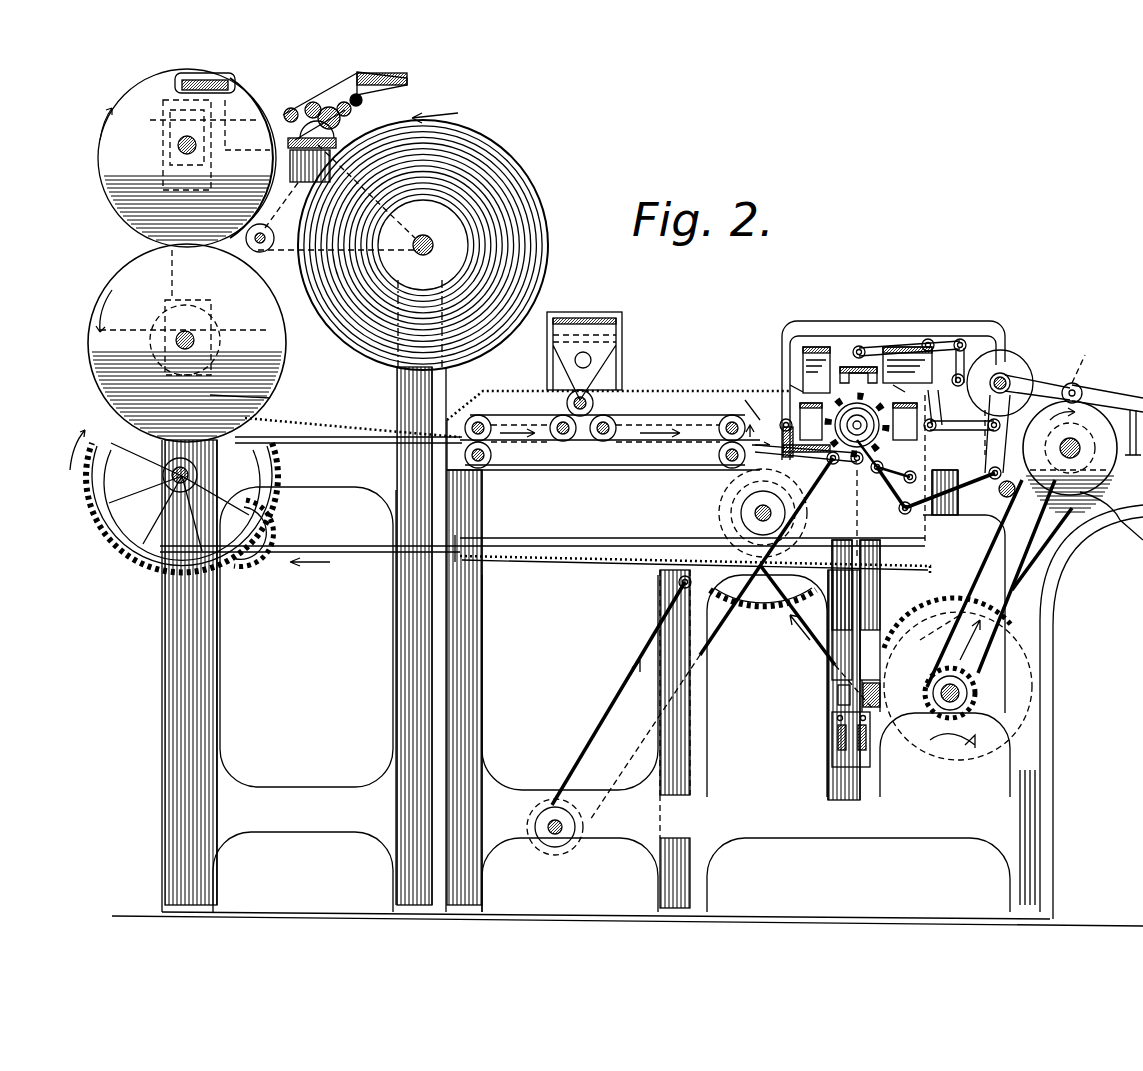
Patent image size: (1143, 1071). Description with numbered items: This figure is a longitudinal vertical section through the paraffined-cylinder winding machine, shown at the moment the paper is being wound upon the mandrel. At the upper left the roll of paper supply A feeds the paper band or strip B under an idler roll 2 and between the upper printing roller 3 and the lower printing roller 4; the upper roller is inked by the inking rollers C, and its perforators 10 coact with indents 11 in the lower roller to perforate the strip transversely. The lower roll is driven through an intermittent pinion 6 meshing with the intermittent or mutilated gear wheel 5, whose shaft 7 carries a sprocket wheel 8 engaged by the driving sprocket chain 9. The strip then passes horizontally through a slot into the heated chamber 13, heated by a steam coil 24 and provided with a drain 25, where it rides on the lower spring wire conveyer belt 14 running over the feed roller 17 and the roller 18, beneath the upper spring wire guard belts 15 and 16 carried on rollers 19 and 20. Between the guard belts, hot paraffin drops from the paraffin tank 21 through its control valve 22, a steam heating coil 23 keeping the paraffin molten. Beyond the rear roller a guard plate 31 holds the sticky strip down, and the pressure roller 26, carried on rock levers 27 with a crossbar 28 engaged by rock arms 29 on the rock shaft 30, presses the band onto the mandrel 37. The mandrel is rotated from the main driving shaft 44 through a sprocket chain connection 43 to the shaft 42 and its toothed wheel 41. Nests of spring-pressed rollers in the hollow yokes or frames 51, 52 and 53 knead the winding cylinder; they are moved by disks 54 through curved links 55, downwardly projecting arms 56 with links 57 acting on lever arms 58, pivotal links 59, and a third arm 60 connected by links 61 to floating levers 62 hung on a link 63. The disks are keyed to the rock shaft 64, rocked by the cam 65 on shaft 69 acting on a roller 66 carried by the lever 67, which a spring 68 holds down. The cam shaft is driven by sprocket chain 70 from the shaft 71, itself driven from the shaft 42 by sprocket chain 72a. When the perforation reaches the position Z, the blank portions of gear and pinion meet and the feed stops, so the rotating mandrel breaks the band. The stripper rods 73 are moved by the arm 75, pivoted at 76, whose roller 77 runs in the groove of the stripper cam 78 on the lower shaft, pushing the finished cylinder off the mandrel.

The roll of paper supply A is at (535, 225).
The paper band or strip B is at (388, 446).
The inking rollers C is at (316, 105).
The position mark Z is at (788, 437).
The idler roll 2 is at (264, 252).
The upper printing roller 3 is at (115, 180).
The lower printing roller 4 is at (177, 343).
The intermittent or mutilated gear wheel 5 is at (95, 528).
The intermittent pinion 6 is at (152, 328).
The shaft 7 is at (165, 470).
The sprocket wheel 8 is at (272, 512).
The driving sprocket chain 9 is at (296, 556).
The perforators 10 is at (245, 88).
The indents 11 is at (255, 395).
The heated chamber 13 is at (572, 578).
The lower spring wire conveyer belt 14 is at (562, 456).
The upper spring wire guard belt 15 is at (520, 419).
The upper spring wire guard belt 16 is at (668, 420).
The feed roller 17 is at (478, 465).
The roller 18 is at (722, 455).
The rollers 19 is at (563, 424).
The rollers 20 is at (732, 430).
The paraffin tank 21 is at (616, 342).
The control valve 22 is at (594, 405).
The steam heating coil 23 is at (592, 362).
The steam coil 24 is at (558, 540).
The drain 25 is at (678, 582).
The pressure roller 26 is at (860, 464).
The rock levers 27 is at (828, 462).
The crossbar 28 is at (884, 466).
The rock arms 29 is at (908, 482).
The rock shaft 30 is at (930, 470).
The guard plate 31 is at (745, 407).
The mandrel 37 is at (815, 373).
The toothed wheel 41 is at (758, 608).
The shaft 42 is at (755, 510).
The sprocket chain connection 43 is at (655, 720).
The main driving shaft 44 is at (566, 832).
The hollow yoke or frame 51 is at (937, 416).
The hollow yoke or frame 52 is at (857, 350).
The hollow yoke or frame 53 is at (800, 412).
The disks 54 is at (1010, 372).
The curved links 55 is at (940, 334).
The downwardly projecting arms 56 is at (992, 477).
The links 57 is at (968, 494).
The lever arms 58 is at (892, 491).
The pivotal links 59 is at (965, 416).
The third arm 60 is at (943, 405).
The links 61 is at (962, 370).
The floating levers 62 is at (892, 344).
The link 63 is at (907, 365).
The rock shaft 64 is at (1037, 380).
The cam 65 is at (1098, 495).
The roller 66 is at (1071, 376).
The lever 67 is at (1100, 396).
The spring 68 is at (1124, 428).
The shaft 69 is at (1070, 456).
The sprocket chain 70 is at (1018, 600).
The shaft 71 is at (978, 696).
The sprocket chain 72a is at (958, 675).
The rods 73 is at (840, 382).
The arm 75 is at (850, 655).
The pivot 76 is at (836, 740).
The roller 77 is at (860, 695).
The stripper cam 78 is at (952, 737).